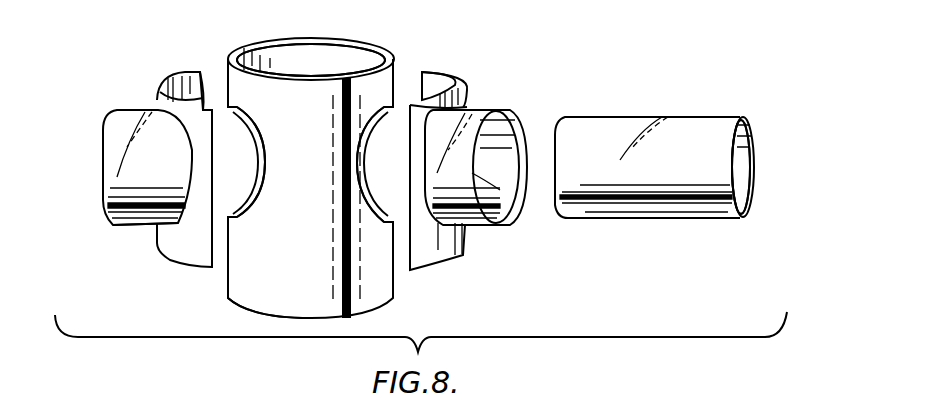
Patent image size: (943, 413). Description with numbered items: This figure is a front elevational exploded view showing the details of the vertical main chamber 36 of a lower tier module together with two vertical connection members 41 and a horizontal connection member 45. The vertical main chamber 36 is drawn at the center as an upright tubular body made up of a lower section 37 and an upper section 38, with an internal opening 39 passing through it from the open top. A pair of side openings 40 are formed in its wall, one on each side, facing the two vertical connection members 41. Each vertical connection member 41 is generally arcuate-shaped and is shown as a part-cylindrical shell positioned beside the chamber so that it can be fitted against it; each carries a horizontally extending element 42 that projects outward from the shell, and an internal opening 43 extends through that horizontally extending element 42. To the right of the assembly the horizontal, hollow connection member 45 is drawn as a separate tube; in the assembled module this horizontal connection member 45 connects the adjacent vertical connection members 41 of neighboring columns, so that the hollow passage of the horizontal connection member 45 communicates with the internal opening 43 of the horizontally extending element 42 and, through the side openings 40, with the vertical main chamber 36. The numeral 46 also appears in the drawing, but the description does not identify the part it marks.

The vertical main chamber 36 is at (327, 247).
The lower section 37 is at (230, 280).
The upper section 38 is at (227, 77).
The internal opening 39 is at (340, 57).
The side openings 40 is at (256, 193).
The vertical connection member 41 is at (182, 75).
The horizontally extending element 42 is at (135, 228).
The internal opening 43 is at (100, 160).
The horizontal connection member 45 is at (625, 118).
The open end of tube 46 is at (743, 147).